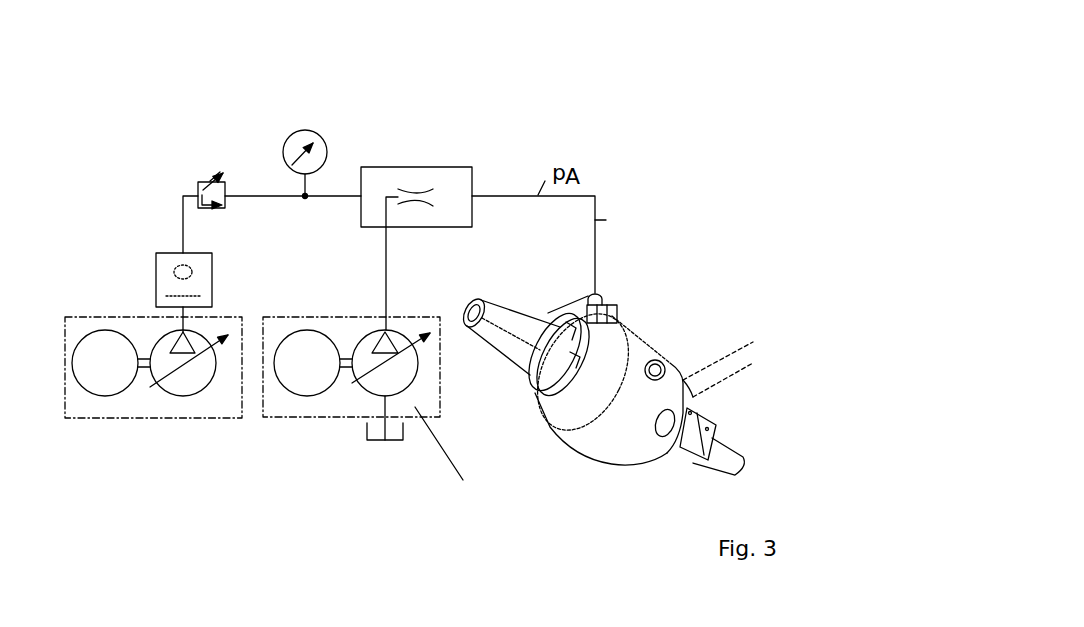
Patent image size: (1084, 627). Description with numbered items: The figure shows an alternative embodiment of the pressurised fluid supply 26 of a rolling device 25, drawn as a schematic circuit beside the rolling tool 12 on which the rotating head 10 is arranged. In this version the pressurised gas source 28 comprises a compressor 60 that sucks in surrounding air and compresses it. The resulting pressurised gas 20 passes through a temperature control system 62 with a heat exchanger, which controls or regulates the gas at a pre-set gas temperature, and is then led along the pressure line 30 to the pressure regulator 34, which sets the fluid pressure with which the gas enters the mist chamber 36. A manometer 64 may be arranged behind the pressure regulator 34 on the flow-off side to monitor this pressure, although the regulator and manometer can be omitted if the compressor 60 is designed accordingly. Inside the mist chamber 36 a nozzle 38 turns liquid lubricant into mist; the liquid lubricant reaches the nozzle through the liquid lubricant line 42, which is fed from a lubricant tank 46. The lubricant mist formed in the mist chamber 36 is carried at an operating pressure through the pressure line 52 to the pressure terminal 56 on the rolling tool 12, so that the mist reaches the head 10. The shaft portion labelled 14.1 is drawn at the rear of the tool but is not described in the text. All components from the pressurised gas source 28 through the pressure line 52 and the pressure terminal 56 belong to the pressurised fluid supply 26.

The head 10 is at (667, 364).
The rolling tool 12 is at (590, 392).
The shaft 14.1 is at (743, 457).
The pressurised gas 20 is at (183, 310).
The rolling device 25 is at (750, 73).
The pressurised fluid supply 26 is at (622, 96).
The pressurised gas source 28 is at (167, 419).
The pressure line 30 is at (182, 237).
The pressure regulator 34 is at (207, 190).
The mist chamber 36 is at (472, 182).
The nozzle 38 is at (422, 192).
The liquid lubricant line 42 is at (403, 260).
The lubricant tank 46 is at (377, 440).
The pressure line 52 is at (577, 197).
The pressure terminal 56 is at (605, 300).
The compressor 60 is at (208, 400).
The temperature control system 62 is at (155, 277).
The manometer 64 is at (323, 145).